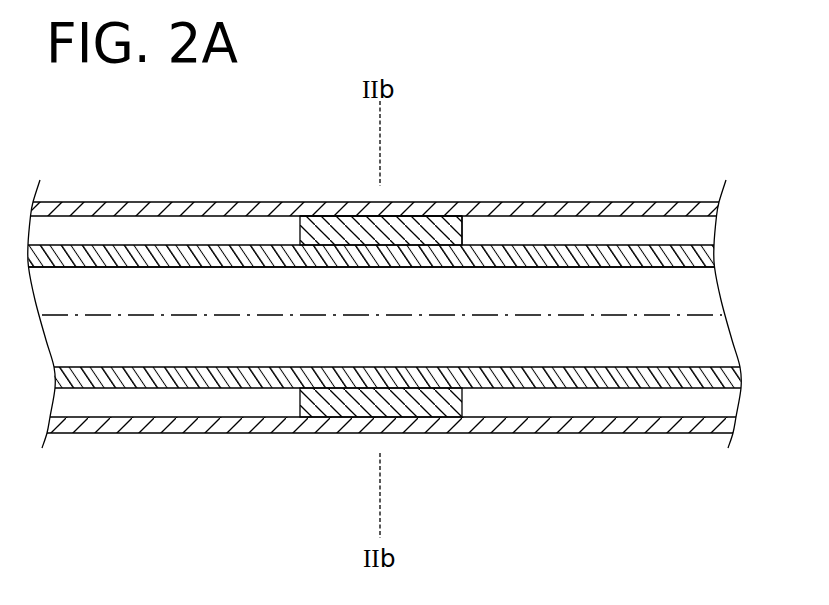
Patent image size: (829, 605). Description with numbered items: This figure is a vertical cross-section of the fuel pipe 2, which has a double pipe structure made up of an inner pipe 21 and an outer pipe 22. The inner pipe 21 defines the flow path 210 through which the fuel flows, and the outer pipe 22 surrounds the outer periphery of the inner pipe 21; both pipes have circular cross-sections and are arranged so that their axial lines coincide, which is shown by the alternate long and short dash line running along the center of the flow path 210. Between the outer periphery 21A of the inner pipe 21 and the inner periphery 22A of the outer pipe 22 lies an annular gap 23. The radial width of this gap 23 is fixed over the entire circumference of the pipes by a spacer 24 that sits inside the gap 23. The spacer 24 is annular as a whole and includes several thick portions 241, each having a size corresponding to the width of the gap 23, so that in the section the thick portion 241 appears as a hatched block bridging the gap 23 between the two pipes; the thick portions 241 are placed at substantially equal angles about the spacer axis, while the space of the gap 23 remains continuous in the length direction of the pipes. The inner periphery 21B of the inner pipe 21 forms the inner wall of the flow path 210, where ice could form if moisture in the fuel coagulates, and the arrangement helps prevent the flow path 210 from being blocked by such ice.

The fuel pipe 2 is at (671, 183).
The inner pipe 21 is at (180, 216).
The outer periphery of the inner pipe 21A is at (107, 245).
The inner periphery of the inner pipe 21B is at (184, 267).
The outer pipe 22 is at (552, 202).
The inner periphery of the outer pipe 22A is at (615, 217).
The annular gap 23 is at (501, 244).
The spacer 24 is at (408, 216).
The thick portion 241 is at (330, 216).
The flow path 210 is at (402, 306).